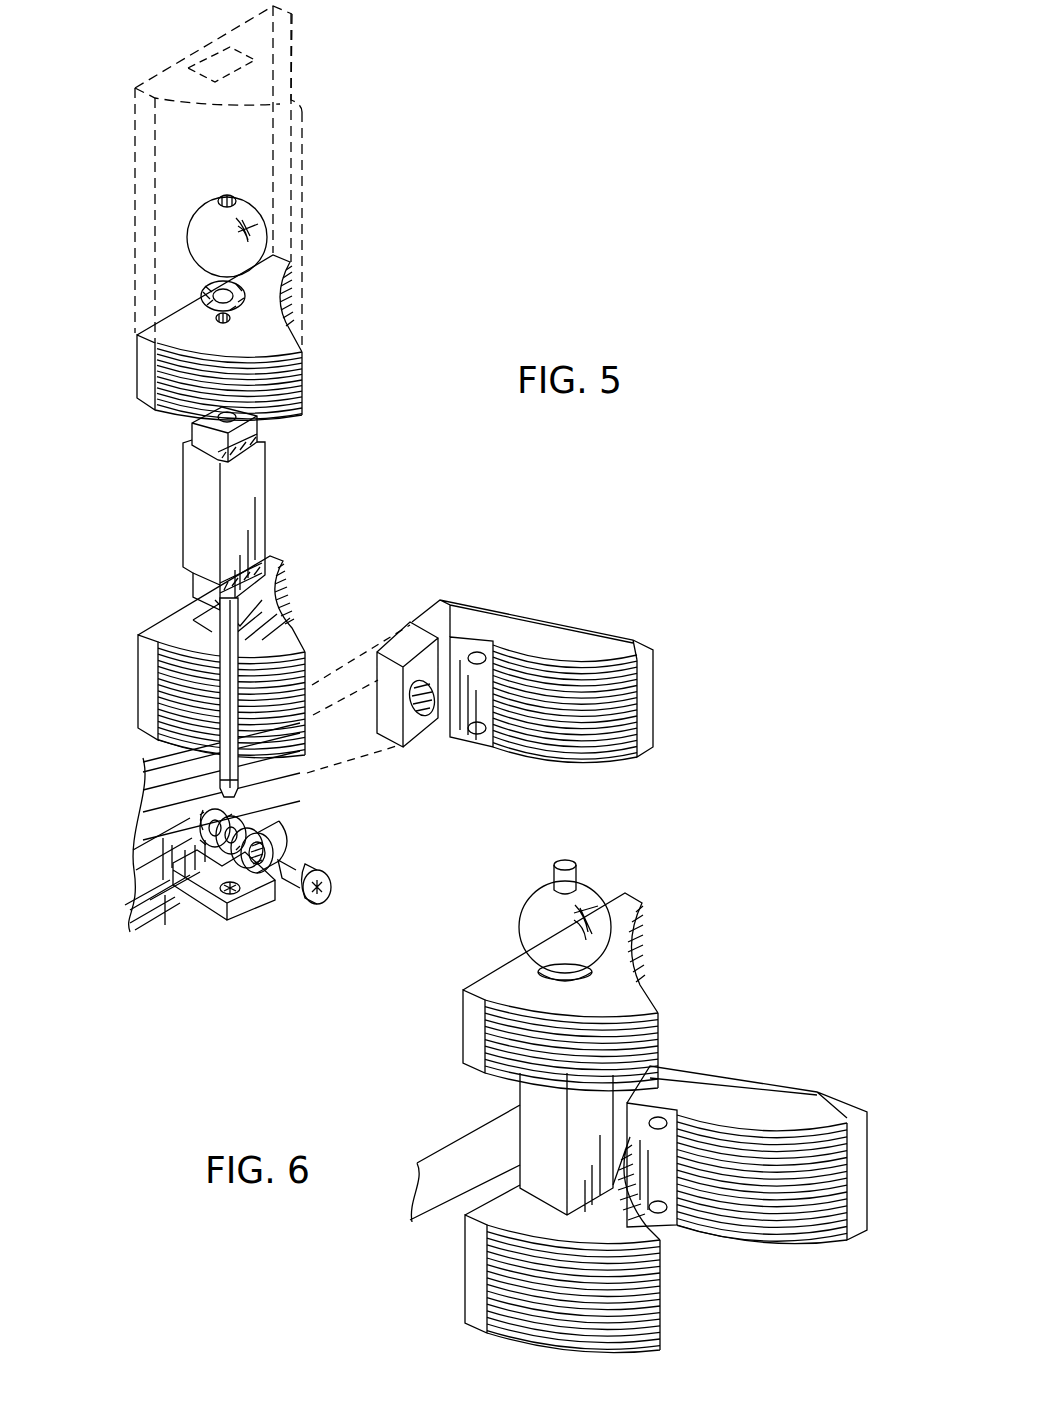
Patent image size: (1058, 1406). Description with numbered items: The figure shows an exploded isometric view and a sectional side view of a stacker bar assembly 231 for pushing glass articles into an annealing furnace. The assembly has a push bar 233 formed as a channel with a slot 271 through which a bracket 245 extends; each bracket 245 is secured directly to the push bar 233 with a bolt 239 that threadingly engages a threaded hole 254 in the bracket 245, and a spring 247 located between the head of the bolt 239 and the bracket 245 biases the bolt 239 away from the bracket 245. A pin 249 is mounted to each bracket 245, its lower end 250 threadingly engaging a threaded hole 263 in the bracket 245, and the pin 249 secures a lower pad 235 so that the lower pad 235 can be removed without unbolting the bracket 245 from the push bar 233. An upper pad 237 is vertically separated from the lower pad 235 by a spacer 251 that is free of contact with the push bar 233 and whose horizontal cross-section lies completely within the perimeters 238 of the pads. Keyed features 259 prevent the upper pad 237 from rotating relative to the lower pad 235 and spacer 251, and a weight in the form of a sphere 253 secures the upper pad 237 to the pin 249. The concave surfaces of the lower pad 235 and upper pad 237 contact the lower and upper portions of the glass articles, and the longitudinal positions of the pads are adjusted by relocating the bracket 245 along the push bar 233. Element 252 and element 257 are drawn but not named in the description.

In FIG. 5, the stacker bar assembly 231 is at (414, 216).
In FIG. 5, the push bar 233 is at (162, 920).
In FIG. 5, the lower pads 235 is at (290, 622).
In FIG. 6, the lower pads 235 is at (515, 1306).
In FIG. 5, the upper pads 237 is at (291, 318).
In FIG. 6, the upper pads 237 is at (617, 982).
In FIG. 5, the perimeters 238 is at (279, 68).
In FIG. 5, the bolt 239 is at (332, 892).
In FIG. 5, the bracket 245 is at (160, 918).
In FIG. 5, the springs 247 is at (268, 847).
In FIG. 5, the pin 249 is at (217, 765).
In FIG. 5, the lower ends 250 is at (210, 810).
In FIG. 5, the spacers 251 is at (246, 503).
In FIG. 6, the spacers 251 is at (545, 1115).
In FIG. 5, the screw hole / washer 252 is at (217, 48).
In FIG. 5, the spheres 253 is at (187, 236).
In FIG. 5, the threaded holes 254 is at (195, 854).
In FIG. 5, the pin 257 is at (203, 608).
In FIG. 5, the keyed features 259 is at (243, 437).
In FIG. 5, the threaded holes 263 is at (248, 880).
In FIG. 5, the slot 271 is at (280, 801).
In FIG. 6, the slot 271 is at (747, 1155).